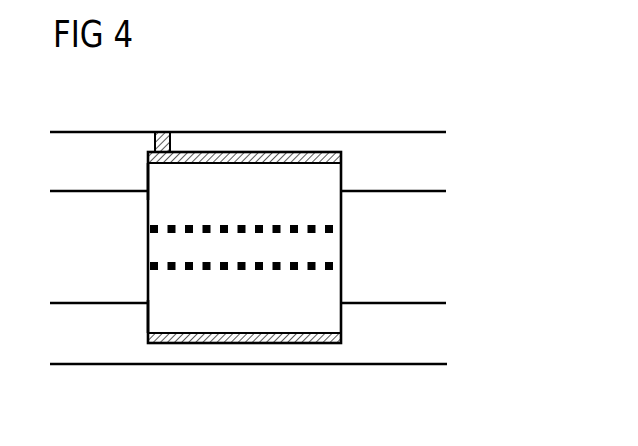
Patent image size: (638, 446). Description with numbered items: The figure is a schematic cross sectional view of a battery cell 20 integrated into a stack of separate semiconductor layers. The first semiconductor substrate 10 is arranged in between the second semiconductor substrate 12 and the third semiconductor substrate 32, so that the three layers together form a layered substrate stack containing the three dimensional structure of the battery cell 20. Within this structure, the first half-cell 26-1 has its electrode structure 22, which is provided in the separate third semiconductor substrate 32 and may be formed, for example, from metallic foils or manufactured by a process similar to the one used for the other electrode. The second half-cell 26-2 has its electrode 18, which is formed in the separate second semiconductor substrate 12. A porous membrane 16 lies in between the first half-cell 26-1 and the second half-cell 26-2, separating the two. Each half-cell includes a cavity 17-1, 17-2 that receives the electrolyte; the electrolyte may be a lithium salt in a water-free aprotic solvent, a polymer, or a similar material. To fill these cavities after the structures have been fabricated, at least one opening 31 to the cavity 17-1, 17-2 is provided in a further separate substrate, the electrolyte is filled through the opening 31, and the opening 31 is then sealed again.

The battery cell 20 is at (397, 92).
The first semiconductor substrate 10 is at (430, 239).
The second semiconductor substrate 12 is at (430, 333).
The porous membrane 16 is at (341, 246).
The cavity 17-1 is at (220, 182).
The cavity 17-2 is at (200, 317).
The electrode 18 is at (245, 343).
The electrode structure 22 is at (283, 152).
The first half-cell 26-1 is at (164, 188).
The second half-cell 26-2 is at (164, 314).
The opening 31 is at (163, 132).
The third semiconductor substrate 32 is at (430, 164).